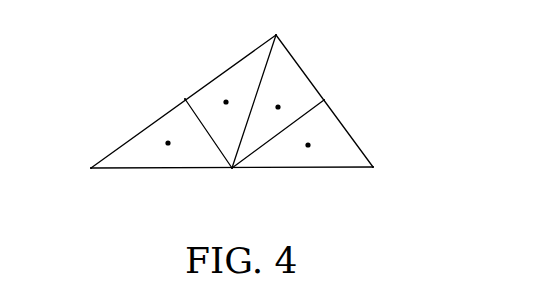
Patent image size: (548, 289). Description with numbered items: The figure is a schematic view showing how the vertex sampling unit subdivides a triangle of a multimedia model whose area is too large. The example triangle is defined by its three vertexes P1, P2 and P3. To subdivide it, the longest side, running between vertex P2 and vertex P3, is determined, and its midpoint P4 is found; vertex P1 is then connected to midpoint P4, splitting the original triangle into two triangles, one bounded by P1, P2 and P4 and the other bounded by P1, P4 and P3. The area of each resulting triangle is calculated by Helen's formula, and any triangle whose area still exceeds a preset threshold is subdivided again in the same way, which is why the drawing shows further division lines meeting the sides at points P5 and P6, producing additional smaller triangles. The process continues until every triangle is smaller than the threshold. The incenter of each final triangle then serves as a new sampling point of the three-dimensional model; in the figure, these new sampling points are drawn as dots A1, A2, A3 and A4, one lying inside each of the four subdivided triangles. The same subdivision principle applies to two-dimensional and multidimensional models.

The vertex P1 is at (296, 25).
The vertex P2 is at (77, 184).
The vertex P3 is at (389, 183).
The midpoint P4 is at (226, 184).
The edge point P5 is at (167, 89).
The edge point P6 is at (341, 89).
The new sampling point A1 is at (225, 114).
The new sampling point A2 is at (160, 153).
The new sampling point A3 is at (323, 151).
The new sampling point A4 is at (280, 95).